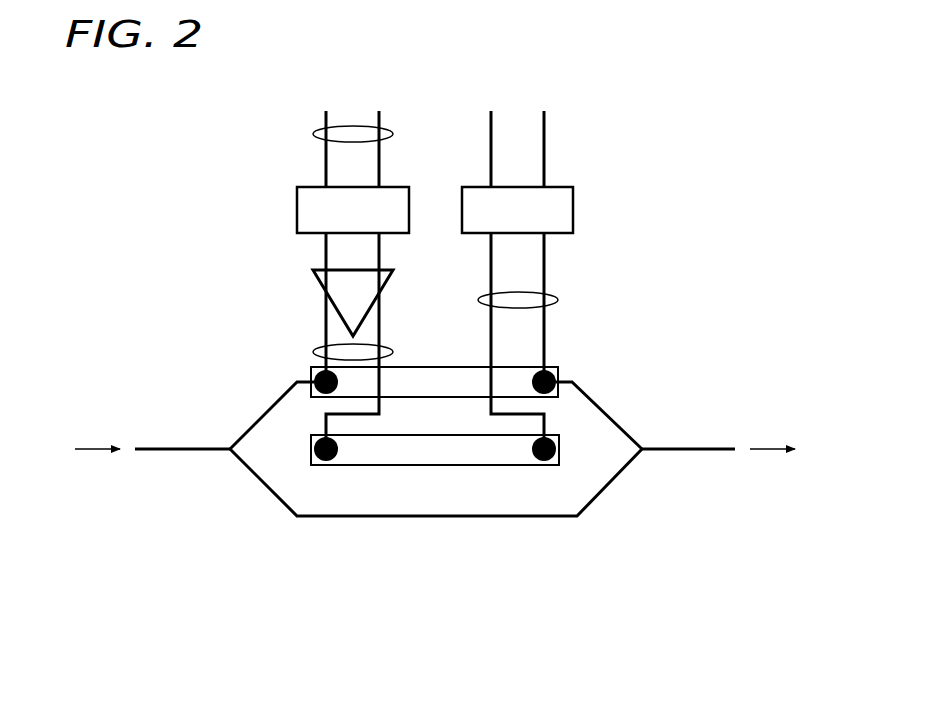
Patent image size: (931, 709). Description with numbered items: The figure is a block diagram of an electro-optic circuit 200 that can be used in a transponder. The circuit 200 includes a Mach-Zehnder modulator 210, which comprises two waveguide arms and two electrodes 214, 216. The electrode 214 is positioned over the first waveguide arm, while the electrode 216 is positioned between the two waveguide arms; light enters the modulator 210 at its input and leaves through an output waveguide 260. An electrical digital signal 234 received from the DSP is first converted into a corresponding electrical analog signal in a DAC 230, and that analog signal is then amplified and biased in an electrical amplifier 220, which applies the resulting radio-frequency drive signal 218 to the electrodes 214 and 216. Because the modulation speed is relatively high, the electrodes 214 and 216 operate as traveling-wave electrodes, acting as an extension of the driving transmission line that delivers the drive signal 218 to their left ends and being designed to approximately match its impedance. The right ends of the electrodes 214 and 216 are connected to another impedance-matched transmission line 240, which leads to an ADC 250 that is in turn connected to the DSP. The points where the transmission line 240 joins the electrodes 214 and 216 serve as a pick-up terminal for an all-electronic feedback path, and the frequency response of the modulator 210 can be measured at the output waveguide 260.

The electro-optic circuit 200 is at (152, 91).
The Mach-Zehnder modulator 210 is at (240, 512).
The electrode 214 is at (436, 366).
The electrode 216 is at (435, 466).
The RF drive signal 218 is at (313, 352).
The electrical amplifier 220 is at (313, 276).
The DAC 230 is at (297, 210).
The electrical digital signal 234 is at (313, 134).
The transmission line 240 is at (558, 300).
The ADC 250 is at (574, 211).
The output waveguide 260 is at (690, 447).